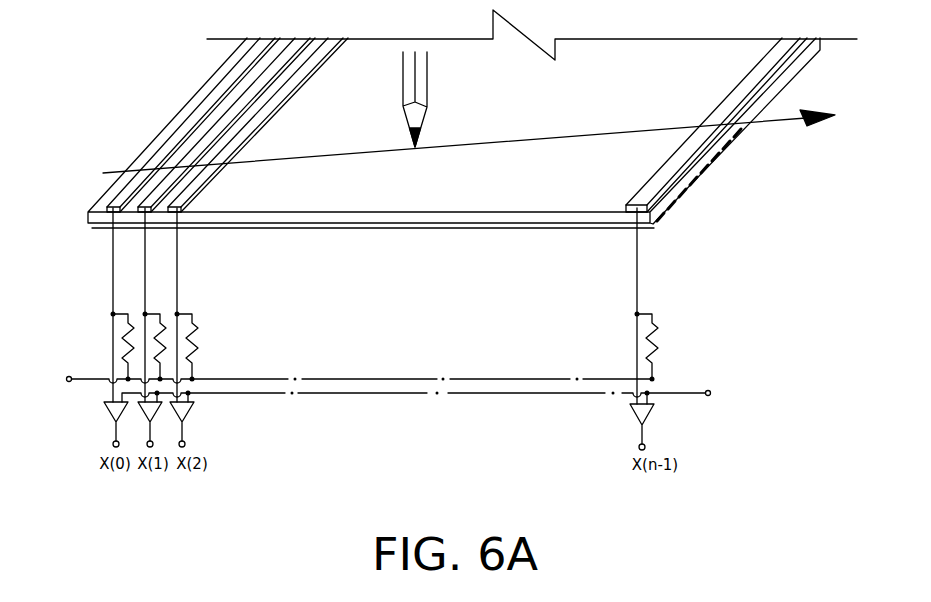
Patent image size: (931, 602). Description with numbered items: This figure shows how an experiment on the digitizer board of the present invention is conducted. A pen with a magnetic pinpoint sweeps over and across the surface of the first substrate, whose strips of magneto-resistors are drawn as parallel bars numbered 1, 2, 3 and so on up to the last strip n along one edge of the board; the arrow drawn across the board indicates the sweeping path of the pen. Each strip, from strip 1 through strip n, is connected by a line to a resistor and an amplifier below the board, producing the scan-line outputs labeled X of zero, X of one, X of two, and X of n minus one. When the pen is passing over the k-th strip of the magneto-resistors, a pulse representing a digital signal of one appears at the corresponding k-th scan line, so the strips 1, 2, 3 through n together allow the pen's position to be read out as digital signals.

The first electrode strip 1 is at (196, 111).
The second electrode strip 2 is at (230, 111).
The third electrode strip 3 is at (261, 111).
The n-th electrode strip n is at (716, 111).